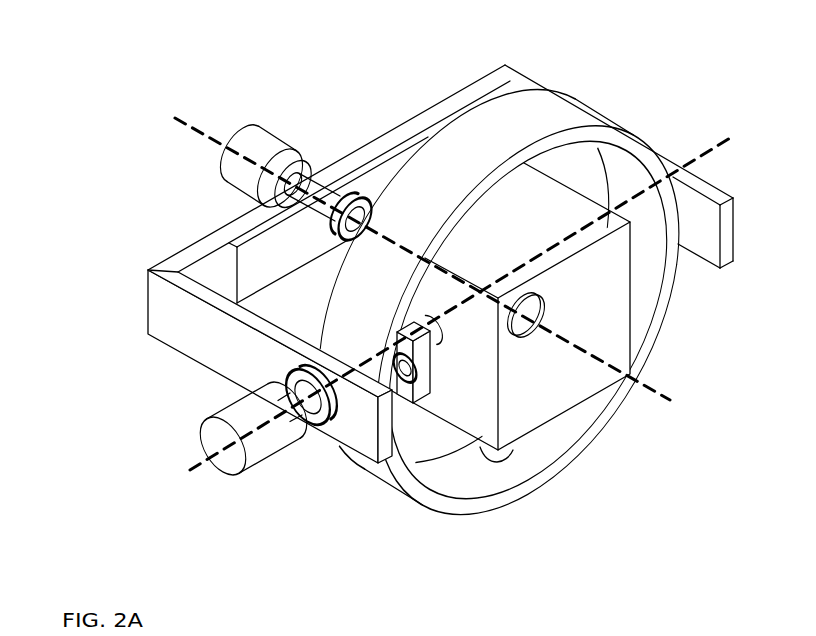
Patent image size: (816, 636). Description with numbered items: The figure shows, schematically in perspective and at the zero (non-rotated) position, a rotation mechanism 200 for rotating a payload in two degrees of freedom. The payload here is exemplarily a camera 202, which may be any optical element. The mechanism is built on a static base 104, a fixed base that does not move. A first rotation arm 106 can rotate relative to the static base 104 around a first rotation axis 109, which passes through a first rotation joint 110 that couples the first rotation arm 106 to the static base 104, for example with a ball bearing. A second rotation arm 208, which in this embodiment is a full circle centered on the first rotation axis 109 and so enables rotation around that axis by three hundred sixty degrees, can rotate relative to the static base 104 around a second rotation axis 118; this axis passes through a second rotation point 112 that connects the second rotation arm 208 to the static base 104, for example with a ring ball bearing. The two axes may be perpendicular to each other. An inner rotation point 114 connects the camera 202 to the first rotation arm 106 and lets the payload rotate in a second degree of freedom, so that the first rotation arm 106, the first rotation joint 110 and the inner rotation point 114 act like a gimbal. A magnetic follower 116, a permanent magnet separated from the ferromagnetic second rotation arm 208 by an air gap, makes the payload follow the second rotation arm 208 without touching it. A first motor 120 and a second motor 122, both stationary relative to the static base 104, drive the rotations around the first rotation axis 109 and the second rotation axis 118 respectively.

The rotation mechanism 200 is at (445, 299).
The static base 104 is at (223, 345).
The first rotation arm 106 is at (372, 180).
The second rotation arm 208 is at (467, 480).
The camera 202 is at (615, 334).
The first rotation axis 109 is at (193, 118).
The second rotation axis 118 is at (190, 462).
The first rotation joint 110 is at (333, 221).
The second rotation point 112 is at (323, 420).
The inner rotation point 114 is at (400, 435).
The magnetic follower 116 is at (512, 452).
The first motor 120 is at (273, 143).
The second motor 122 is at (233, 462).